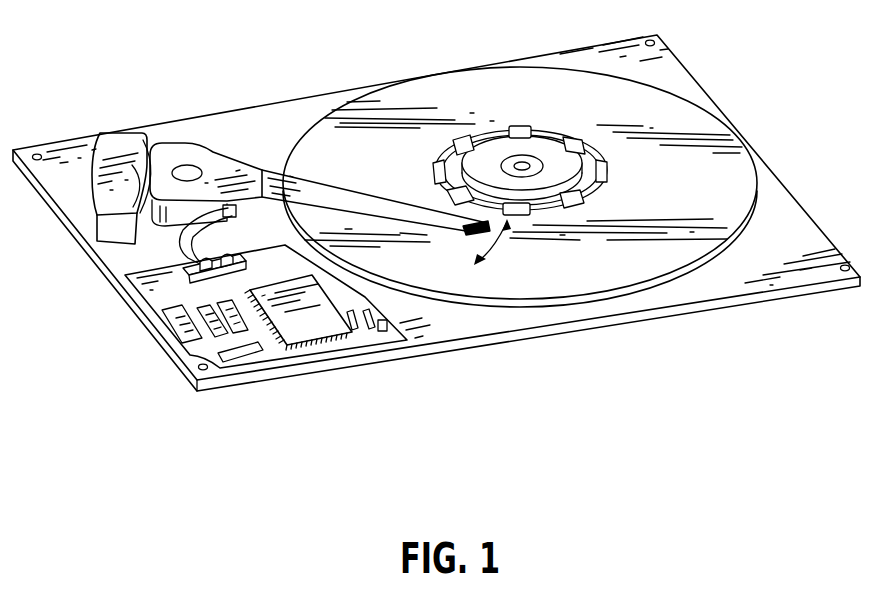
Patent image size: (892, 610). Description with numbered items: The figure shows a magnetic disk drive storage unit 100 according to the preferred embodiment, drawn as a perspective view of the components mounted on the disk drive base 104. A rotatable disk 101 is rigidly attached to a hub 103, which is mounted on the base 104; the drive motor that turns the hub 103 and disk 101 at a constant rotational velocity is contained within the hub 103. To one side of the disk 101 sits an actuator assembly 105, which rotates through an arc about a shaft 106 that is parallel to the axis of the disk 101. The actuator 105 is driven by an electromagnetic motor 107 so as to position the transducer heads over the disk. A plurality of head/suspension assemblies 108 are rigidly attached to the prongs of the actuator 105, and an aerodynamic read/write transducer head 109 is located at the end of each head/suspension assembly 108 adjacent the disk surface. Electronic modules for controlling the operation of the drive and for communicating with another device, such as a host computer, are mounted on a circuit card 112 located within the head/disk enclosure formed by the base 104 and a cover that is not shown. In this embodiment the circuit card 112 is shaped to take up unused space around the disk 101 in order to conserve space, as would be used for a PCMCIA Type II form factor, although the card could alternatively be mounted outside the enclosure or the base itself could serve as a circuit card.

The magnetic disk drive storage unit 100 is at (300, 76).
The rotatable disk 101 is at (737, 172).
The hub 103 is at (543, 150).
The disk drive base 104 is at (697, 82).
The actuator assembly 105 is at (242, 156).
The shaft 106 is at (187, 165).
The electromagnetic motor 107 is at (107, 148).
The head/suspension assembly 108 is at (362, 195).
The read/write transducer head 109 is at (475, 234).
The circuit card 112 is at (283, 352).